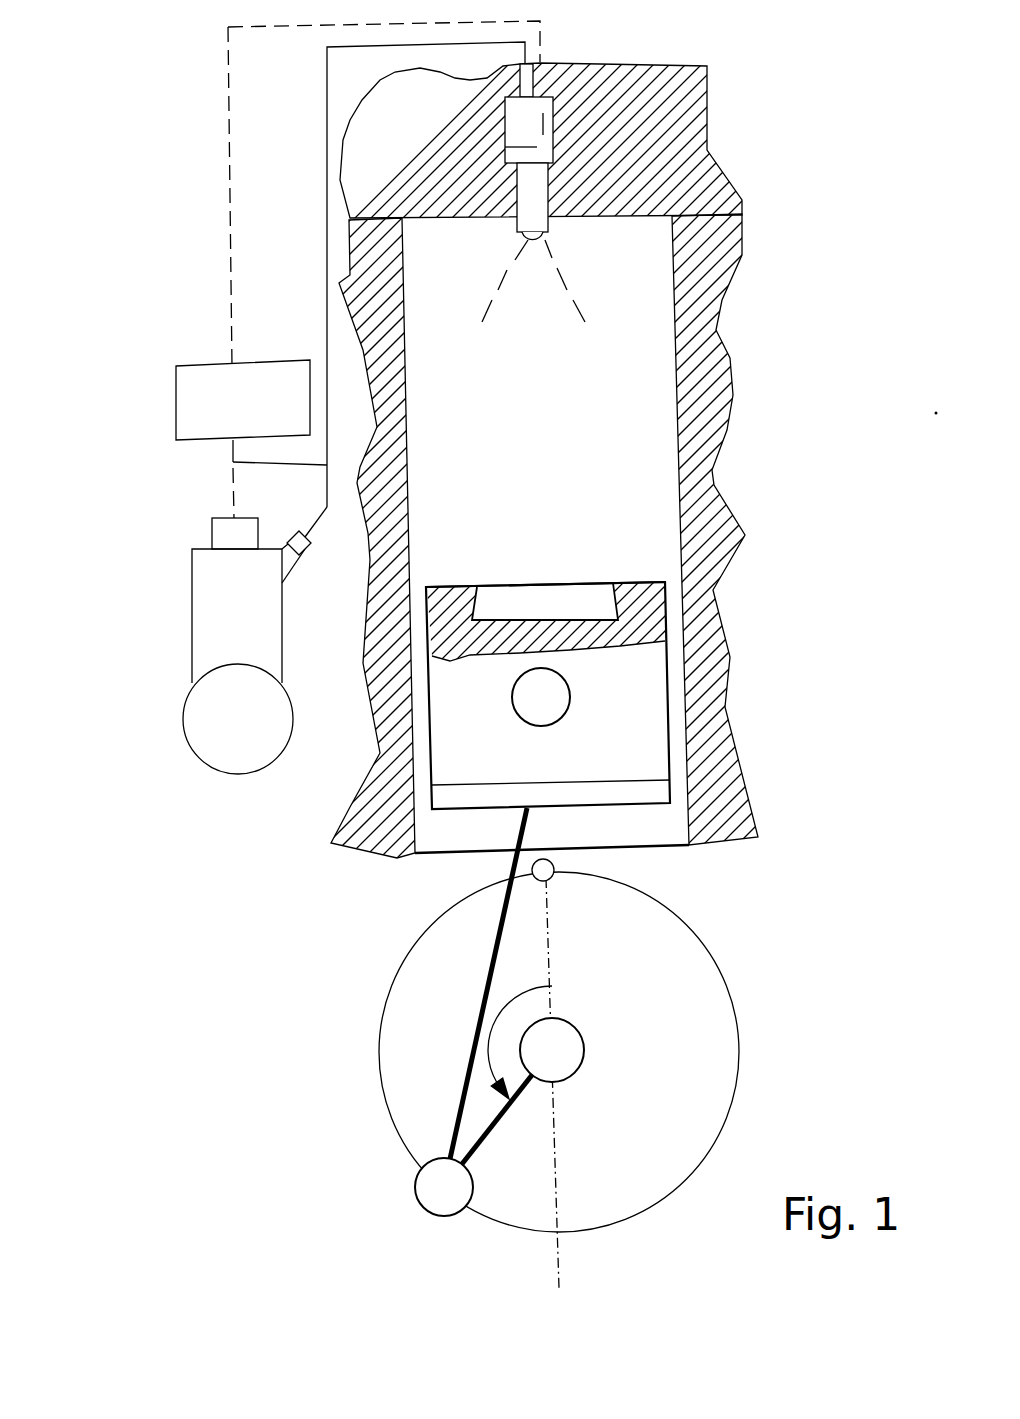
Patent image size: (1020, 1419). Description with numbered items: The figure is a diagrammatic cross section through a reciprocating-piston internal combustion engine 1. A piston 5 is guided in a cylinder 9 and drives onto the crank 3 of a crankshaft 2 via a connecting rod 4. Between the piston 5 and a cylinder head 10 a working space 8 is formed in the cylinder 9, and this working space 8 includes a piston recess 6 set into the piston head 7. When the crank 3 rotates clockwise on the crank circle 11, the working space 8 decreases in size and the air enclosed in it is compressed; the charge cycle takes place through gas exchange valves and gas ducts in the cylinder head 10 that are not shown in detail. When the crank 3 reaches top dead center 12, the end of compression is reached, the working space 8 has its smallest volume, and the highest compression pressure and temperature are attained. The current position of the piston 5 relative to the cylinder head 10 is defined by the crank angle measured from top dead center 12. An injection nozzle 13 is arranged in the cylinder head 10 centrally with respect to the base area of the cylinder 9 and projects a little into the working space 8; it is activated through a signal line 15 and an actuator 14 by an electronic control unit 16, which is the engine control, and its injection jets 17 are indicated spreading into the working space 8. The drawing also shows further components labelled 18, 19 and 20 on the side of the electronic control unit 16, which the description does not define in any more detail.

The reciprocating-piston internal combustion engine 1 is at (792, 225).
The crankshaft 2 is at (575, 1055).
The crank 3 is at (485, 1143).
The connecting rod 4 is at (470, 1073).
The piston 5 is at (605, 763).
The piston recess 6 is at (596, 606).
The piston head 7 is at (630, 576).
The working space 8 is at (645, 465).
The cylinder 9 is at (693, 365).
The cylinder head 10 is at (378, 150).
The crank circle 11 is at (706, 953).
The top dead center 12 is at (554, 871).
The injection nozzle 13 is at (537, 178).
The actuator 14 is at (537, 145).
The signal line 15 is at (228, 58).
The electronic control unit 16 is at (195, 361).
The injection jets 17 is at (507, 270).
The fuel pump 18 is at (220, 637).
The signal line 19 is at (233, 462).
The pump connector 20 is at (225, 532).